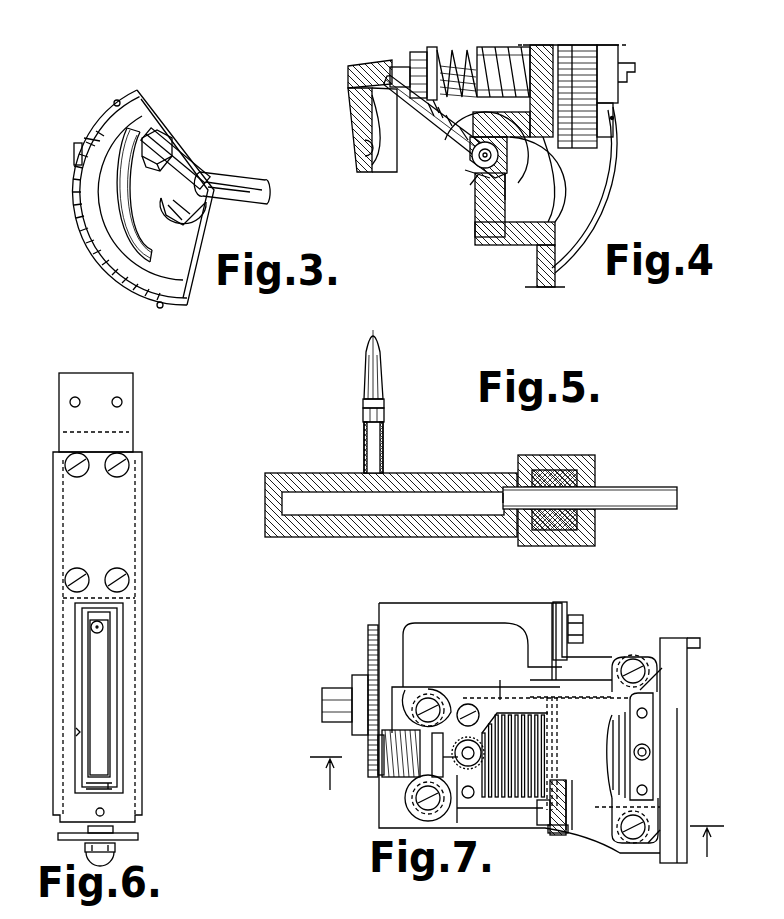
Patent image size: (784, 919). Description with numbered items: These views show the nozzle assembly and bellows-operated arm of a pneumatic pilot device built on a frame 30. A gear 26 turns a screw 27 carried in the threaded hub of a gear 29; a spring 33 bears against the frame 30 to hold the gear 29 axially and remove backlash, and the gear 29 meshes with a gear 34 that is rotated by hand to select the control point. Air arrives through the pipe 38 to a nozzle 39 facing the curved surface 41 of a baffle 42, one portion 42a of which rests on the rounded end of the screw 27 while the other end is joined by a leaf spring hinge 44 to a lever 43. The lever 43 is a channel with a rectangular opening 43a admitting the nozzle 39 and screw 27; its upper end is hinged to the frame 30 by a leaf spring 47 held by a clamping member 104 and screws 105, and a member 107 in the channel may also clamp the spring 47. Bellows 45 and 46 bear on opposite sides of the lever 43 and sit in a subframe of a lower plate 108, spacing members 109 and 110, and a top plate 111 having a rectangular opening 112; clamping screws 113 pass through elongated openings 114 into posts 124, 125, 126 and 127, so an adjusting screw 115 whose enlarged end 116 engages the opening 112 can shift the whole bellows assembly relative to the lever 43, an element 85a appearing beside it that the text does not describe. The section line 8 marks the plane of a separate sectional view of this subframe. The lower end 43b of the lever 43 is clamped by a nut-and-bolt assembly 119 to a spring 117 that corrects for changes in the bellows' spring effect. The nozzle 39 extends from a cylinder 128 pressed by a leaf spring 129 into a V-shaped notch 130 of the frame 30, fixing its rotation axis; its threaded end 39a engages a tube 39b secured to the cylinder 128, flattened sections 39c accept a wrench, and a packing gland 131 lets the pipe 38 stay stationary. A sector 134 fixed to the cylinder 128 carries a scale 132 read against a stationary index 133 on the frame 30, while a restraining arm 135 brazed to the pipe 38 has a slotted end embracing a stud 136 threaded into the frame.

In FIG. 7, the section line 8 is at (517, 817).
In FIG. 4, the gear 26 is at (585, 62).
In FIG. 4, the screw 27 is at (448, 60).
In FIG. 4, the gear 29 is at (565, 57).
In FIG. 3, the frame 30 is at (86, 138).
In FIG. 4, the frame 30 is at (487, 228).
In FIG. 7, the frame 30 is at (480, 590).
In FIG. 4, the spring 33 is at (484, 55).
In FIG. 7, the gear 34 is at (369, 640).
In FIG. 3, the air-supply pipe 38 is at (240, 186).
In FIG. 5, the air-supply pipe 38 is at (640, 489).
In FIG. 4, the nozzle 39 is at (415, 107).
In FIG. 5, the nozzle 39 is at (381, 368).
In FIG. 4, the threaded end 39a is at (452, 127).
In FIG. 5, the threaded end 39a is at (385, 415).
In FIG. 4, the tube 39b is at (466, 143).
In FIG. 5, the tube 39b is at (384, 448).
In FIG. 4, the flattened sections 39c is at (434, 110).
In FIG. 5, the flattened sections 39c is at (363, 402).
In FIG. 4, the curved surface 41 is at (366, 152).
In FIG. 6, the curved surface 41 is at (100, 705).
In FIG. 4, the baffle 42 is at (352, 110).
In FIG. 6, the baffle 42 is at (110, 668).
In FIG. 4, the slide pin 42a is at (350, 78).
In FIG. 6, the slide pin 42a is at (100, 627).
In FIG. 6, the lever 43 is at (126, 543).
In FIG. 7, the lever 43 is at (558, 836).
In FIG. 6, the rectangular opening 43a is at (77, 735).
In FIG. 6, the lever end 43b is at (70, 838).
In FIG. 6, the leaf spring hinge 44 is at (114, 788).
In FIG. 7, the bellows 45 is at (519, 800).
In FIG. 7, the bellows 46 is at (573, 795).
In FIG. 6, the leaf spring hinge 47 is at (125, 388).
In FIG. 7, the leaf spring hinge 47 is at (553, 670).
In FIG. 7, the bearing 85a is at (474, 742).
In FIG. 7, the clamping member 104 is at (562, 604).
In FIG. 7, the threaded screws 105 is at (580, 626).
In FIG. 7, the member 107 is at (563, 828).
In FIG. 7, the lower plate 108 is at (500, 800).
In FIG. 7, the spacing member 109 is at (466, 805).
In FIG. 7, the spacing member 110 is at (645, 770).
In FIG. 7, the top plate 111 is at (508, 684).
In FIG. 7, the rectangular opening 112 is at (402, 771).
In FIG. 7, the clamping screws 113 is at (430, 698).
In FIG. 7, the elongated openings 114 is at (440, 732).
In FIG. 7, the adjusting screw 115 is at (392, 752).
In FIG. 7, the enlarged end 116 is at (472, 704).
In FIG. 6, the spring 117 is at (90, 848).
In FIG. 6, the nut-and-bolt assembly 119 is at (110, 856).
In FIG. 7, the post 124 is at (650, 658).
In FIG. 7, the post 125 is at (655, 826).
In FIG. 7, the post 126 is at (416, 698).
In FIG. 7, the post 127 is at (405, 805).
In FIG. 4, the cylinder 128 is at (478, 166).
In FIG. 5, the cylinder 128 is at (300, 530).
In FIG. 4, the leaf spring 129 is at (504, 145).
In FIG. 4, the V-shaped notch 130 is at (480, 153).
In FIG. 3, the packing gland 131 is at (201, 203).
In FIG. 5, the packing gland 131 is at (562, 470).
In FIG. 3, the scale 132 is at (100, 241).
In FIG. 4, the scale 132 is at (602, 197).
In FIG. 3, the stationary index 133 is at (74, 150).
In FIG. 4, the stationary index 133 is at (613, 119).
In FIG. 3, the sector 134 is at (166, 270).
In FIG. 4, the sector 134 is at (605, 181).
In FIG. 3, the restraining arm 135 is at (187, 170).
In FIG. 3, the stud 136 is at (160, 145).